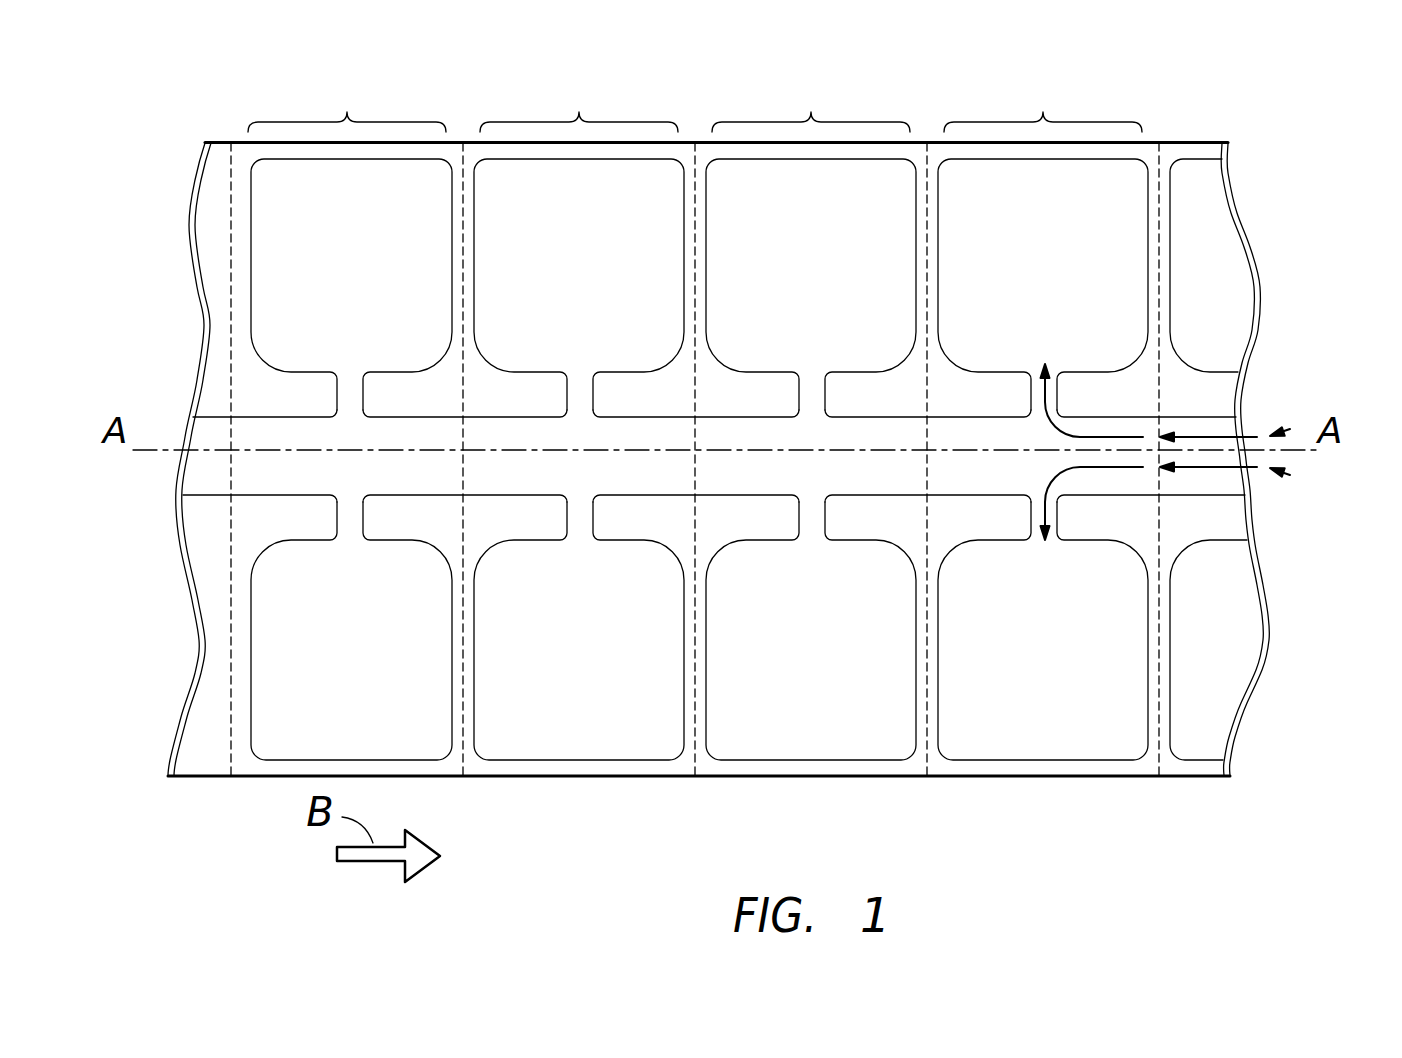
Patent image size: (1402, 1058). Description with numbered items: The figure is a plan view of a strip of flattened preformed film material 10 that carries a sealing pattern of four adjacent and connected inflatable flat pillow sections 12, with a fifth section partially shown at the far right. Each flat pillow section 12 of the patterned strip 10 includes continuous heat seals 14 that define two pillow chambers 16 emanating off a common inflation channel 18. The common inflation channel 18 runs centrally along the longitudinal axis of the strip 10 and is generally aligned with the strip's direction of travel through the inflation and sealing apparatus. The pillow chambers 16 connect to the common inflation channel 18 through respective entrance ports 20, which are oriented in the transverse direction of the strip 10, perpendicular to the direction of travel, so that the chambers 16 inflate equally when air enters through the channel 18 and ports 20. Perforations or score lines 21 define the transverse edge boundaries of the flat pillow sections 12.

The film material 10 is at (1305, 108).
The flat pillow section 12 is at (695, 109).
The continuous heat seal 14 is at (684, 214).
The pillow chamber 16 is at (422, 194).
The common inflation channel 18 is at (1190, 430).
The entrance port 20 is at (352, 393).
The perforations or score lines 21 is at (1162, 255).